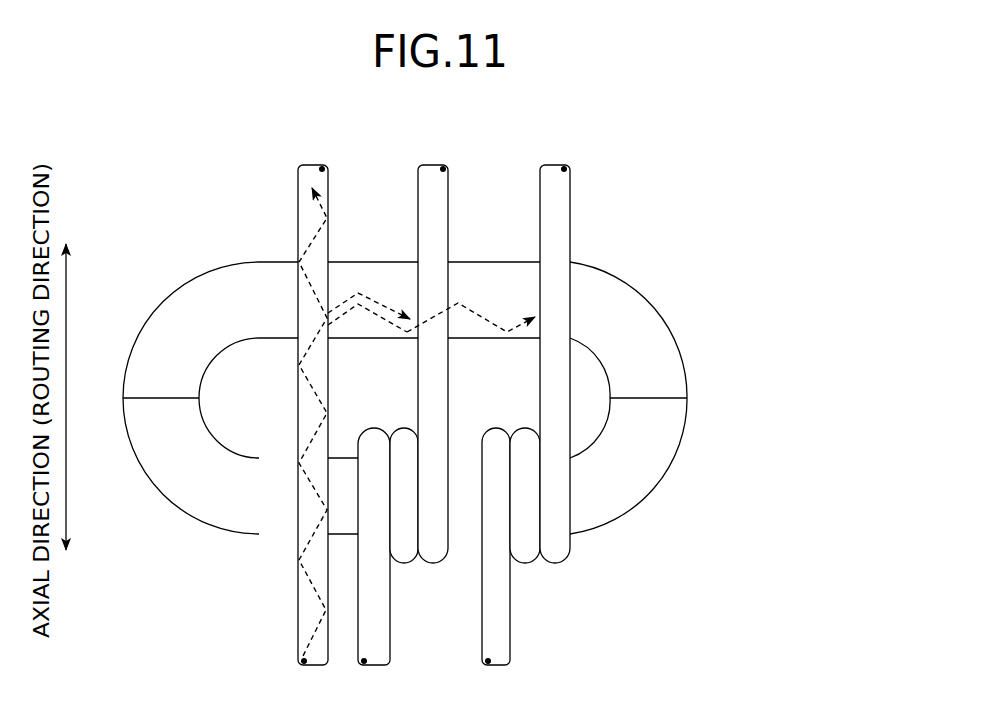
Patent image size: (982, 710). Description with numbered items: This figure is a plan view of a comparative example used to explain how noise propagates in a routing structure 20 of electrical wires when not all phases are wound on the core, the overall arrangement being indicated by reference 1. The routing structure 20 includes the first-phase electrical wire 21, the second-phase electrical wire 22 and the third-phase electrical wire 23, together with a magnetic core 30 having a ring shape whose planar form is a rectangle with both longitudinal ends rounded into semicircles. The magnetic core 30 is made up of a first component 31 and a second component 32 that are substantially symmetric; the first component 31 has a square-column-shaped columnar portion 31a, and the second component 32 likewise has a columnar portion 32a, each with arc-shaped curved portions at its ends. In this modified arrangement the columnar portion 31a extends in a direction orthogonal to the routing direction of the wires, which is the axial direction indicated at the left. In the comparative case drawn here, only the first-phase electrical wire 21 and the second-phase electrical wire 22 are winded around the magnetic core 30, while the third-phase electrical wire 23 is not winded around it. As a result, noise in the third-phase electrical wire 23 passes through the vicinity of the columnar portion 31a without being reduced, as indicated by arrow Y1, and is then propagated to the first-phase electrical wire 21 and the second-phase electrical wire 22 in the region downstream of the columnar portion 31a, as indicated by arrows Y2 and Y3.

The coil component 1 is at (140, 146).
The routing structure 20 is at (260, 200).
The first-phase electrical wire 21 is at (554, 157).
The second-phase electrical wire 22 is at (433, 157).
The third-phase electrical wire 23 is at (314, 157).
The magnetic core 30 is at (803, 340).
The first component 31 is at (692, 423).
The columnar portion 31a is at (344, 512).
The second component 32 is at (690, 348).
The columnar portion 32a is at (392, 280).
The arrow Y1 is at (298, 588).
The arrow Y2 is at (344, 296).
The arrow Y3 is at (484, 312).